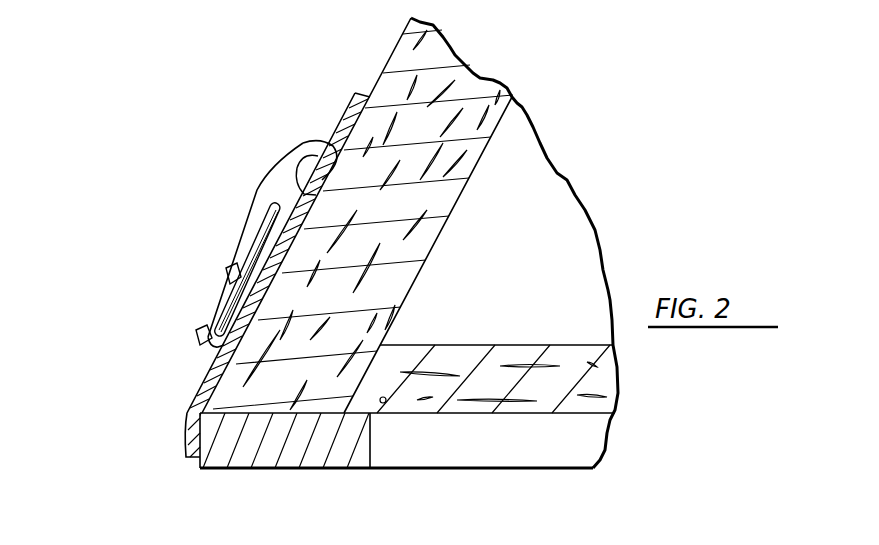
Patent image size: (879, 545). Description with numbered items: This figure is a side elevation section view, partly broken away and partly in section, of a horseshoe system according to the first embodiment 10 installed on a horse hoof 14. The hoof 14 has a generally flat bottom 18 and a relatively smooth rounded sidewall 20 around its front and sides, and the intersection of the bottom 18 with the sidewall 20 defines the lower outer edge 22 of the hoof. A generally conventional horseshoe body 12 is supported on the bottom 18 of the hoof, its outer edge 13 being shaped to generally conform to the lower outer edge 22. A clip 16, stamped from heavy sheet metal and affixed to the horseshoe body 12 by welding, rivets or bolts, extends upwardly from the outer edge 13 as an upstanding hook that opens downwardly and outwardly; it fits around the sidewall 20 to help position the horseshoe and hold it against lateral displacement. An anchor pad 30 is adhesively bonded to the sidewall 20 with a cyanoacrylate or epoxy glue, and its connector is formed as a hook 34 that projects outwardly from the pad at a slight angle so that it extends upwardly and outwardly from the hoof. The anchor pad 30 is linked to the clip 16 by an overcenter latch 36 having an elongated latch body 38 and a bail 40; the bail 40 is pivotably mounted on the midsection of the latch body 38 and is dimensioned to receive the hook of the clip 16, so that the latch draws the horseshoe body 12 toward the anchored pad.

The first embodiment 10 is at (117, 164).
The horseshoe body 12 is at (358, 466).
The outer edge 13 is at (223, 465).
The horse hoof 14 is at (470, 46).
The clip 16 is at (207, 372).
The bottom 18 is at (312, 416).
The sidewall 20 is at (393, 50).
The lower outer edge 22 is at (187, 423).
The anchor pad 30 is at (340, 108).
The hook 34 is at (228, 266).
The overcenter latch 36 is at (254, 203).
The latch body 38 is at (272, 174).
The bail 40 is at (231, 300).